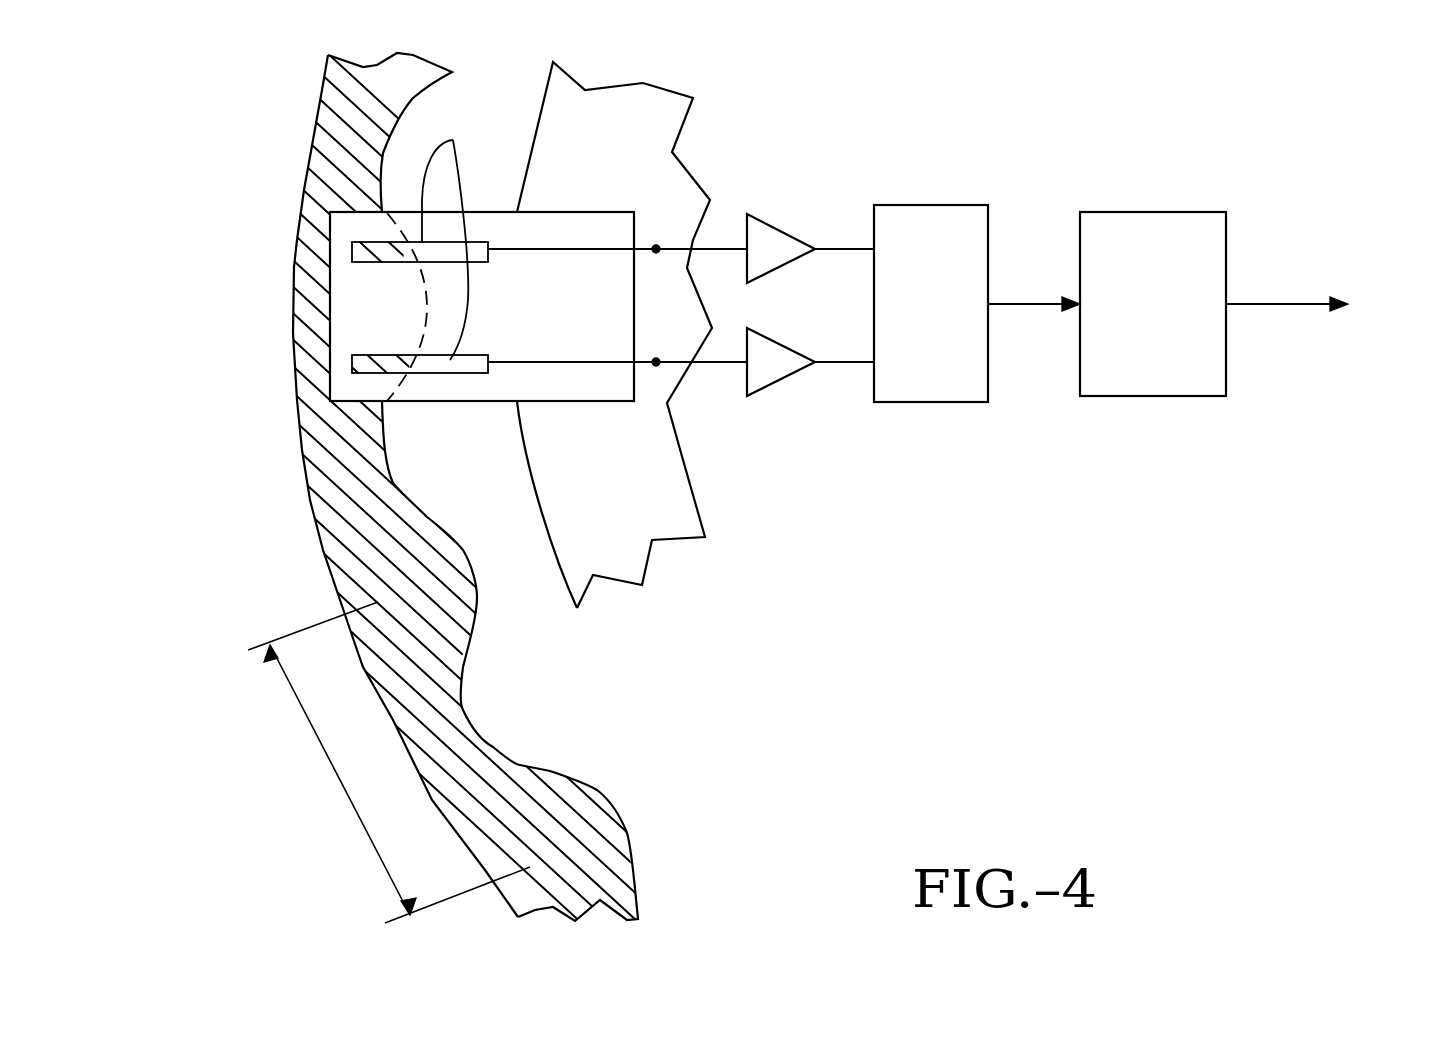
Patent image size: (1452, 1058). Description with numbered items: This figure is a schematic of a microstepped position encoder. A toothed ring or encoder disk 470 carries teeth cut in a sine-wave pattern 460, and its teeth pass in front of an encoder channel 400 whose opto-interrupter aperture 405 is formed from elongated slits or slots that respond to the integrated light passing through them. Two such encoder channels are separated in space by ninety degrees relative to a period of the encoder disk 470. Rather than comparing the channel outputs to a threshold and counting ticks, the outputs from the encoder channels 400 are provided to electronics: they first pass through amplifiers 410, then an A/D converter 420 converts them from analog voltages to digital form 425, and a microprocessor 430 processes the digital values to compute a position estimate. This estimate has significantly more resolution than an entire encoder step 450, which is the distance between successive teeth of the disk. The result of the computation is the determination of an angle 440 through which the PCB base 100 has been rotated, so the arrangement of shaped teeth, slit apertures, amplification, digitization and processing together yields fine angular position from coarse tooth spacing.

The PCB base 100 is at (660, 128).
The encoder channel 400 is at (483, 395).
The opto-interrupter aperture 405 is at (447, 264).
The amplifier 410 is at (773, 237).
The A/D converter 420 is at (937, 402).
The digital form 425 is at (1025, 303).
The microprocessor 430 is at (1159, 396).
The angle 440 is at (1330, 320).
The encoder step 450 is at (343, 793).
The sine-wave pattern 460 is at (615, 820).
The encoder disk 470 is at (318, 165).